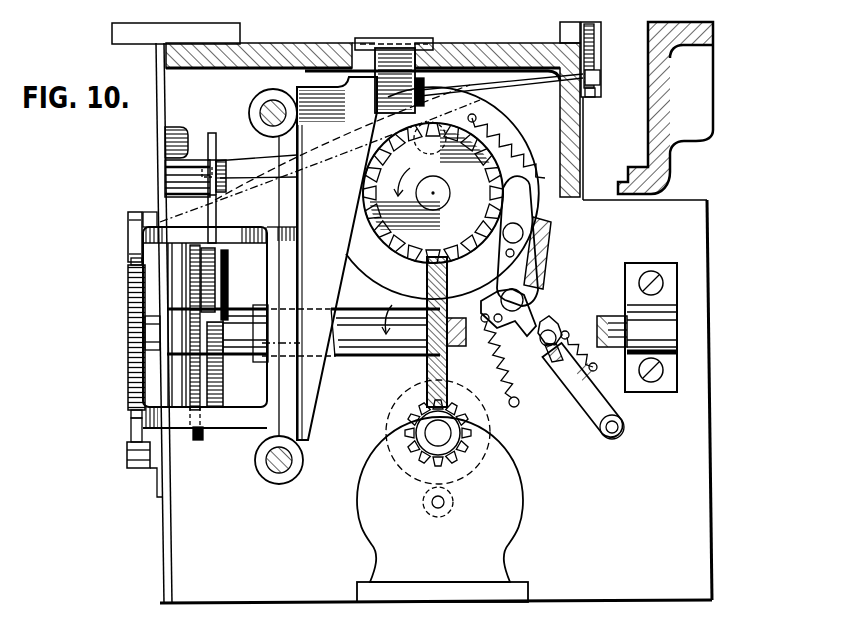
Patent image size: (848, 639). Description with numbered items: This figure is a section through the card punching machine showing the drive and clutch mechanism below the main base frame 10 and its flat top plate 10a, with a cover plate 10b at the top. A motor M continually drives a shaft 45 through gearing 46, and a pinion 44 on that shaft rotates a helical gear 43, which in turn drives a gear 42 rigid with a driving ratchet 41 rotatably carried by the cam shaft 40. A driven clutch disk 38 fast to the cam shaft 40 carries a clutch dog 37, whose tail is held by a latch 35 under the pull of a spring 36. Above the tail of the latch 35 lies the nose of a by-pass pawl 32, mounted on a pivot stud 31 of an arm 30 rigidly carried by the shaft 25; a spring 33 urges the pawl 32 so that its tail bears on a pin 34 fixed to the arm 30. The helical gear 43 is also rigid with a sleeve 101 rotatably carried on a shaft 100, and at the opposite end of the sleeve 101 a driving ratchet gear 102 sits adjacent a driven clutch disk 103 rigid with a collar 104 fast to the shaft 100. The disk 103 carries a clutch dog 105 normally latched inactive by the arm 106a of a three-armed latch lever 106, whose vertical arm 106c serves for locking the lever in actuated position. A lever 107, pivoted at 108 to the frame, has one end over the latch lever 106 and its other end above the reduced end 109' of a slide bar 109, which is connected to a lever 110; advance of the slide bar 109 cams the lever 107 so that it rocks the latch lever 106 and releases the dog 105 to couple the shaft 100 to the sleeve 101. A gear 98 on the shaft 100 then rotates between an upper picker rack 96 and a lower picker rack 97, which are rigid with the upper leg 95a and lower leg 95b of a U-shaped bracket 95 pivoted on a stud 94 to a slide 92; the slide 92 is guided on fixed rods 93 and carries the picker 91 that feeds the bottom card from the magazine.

The main base frame 10 is at (646, 150).
The top flat plate 10a is at (493, 43).
The housing cover plate 10b is at (240, 33).
The shaft 25 is at (608, 436).
The arm 30 is at (583, 393).
The pivot stud 31 is at (548, 341).
The by-pass pawl 32 is at (552, 321).
The spring 33 is at (573, 343).
The pin 34 is at (557, 361).
The latch 35 is at (532, 284).
The spring 36 is at (496, 351).
The clutch dog 37 is at (540, 207).
The driven clutch disk 38 is at (513, 140).
The cam shaft 40 is at (437, 196).
The driving ratchet 41 is at (412, 225).
The gear 42 is at (395, 239).
The helical gear 43 is at (449, 282).
The pinion 44 is at (457, 452).
The shaft 45 is at (432, 443).
The gearing 46 is at (454, 491).
The picker 91 is at (418, 41).
The slide 92 is at (296, 206).
The fixed rods 93 is at (257, 106).
The stud 94 is at (300, 334).
The U-shaped bracket 95 is at (266, 268).
The upper leg 95a is at (147, 214).
The lower leg 95b is at (229, 421).
The upper picker rack 96 is at (126, 253).
The lower picker rack 97 is at (135, 422).
The gear 98 is at (134, 337).
The shaft 100 is at (153, 316).
The sleeve 101 is at (340, 360).
The driving ratchet gear 102 is at (222, 380).
The driven clutch disk 103 is at (193, 445).
The collar 104 is at (181, 368).
The clutch dog 105 is at (213, 291).
The three-armed latch lever 106 is at (224, 182).
The arm 106a is at (211, 204).
The vertical arm 106c is at (209, 138).
The lever 107 is at (256, 172).
The pivot 108 is at (452, 96).
The slide bar 109 is at (612, 56).
The reduced end 109' is at (605, 104).
The lever 110 is at (599, 48).
The motor M is at (499, 549).